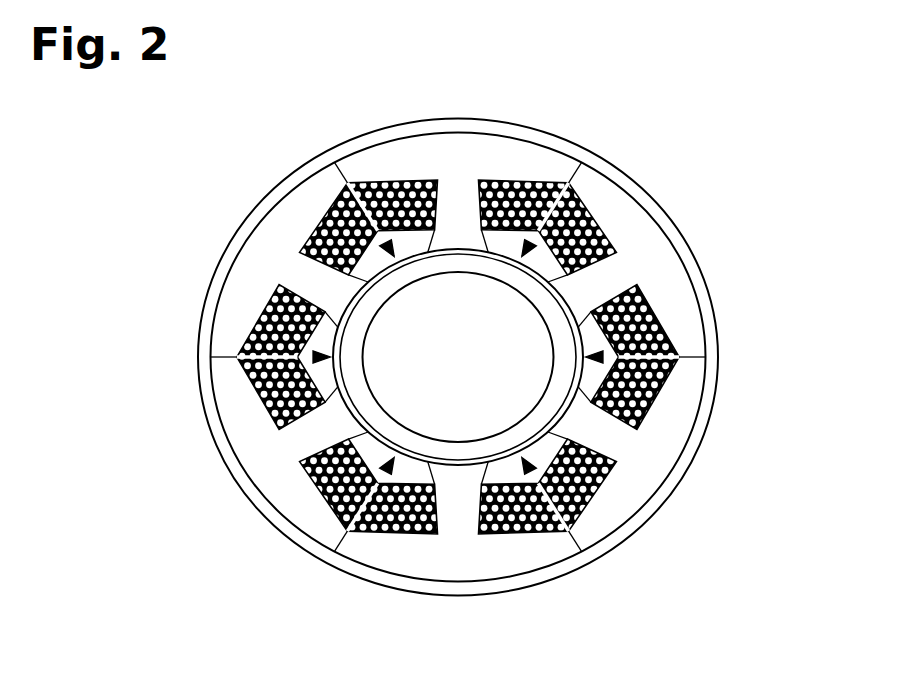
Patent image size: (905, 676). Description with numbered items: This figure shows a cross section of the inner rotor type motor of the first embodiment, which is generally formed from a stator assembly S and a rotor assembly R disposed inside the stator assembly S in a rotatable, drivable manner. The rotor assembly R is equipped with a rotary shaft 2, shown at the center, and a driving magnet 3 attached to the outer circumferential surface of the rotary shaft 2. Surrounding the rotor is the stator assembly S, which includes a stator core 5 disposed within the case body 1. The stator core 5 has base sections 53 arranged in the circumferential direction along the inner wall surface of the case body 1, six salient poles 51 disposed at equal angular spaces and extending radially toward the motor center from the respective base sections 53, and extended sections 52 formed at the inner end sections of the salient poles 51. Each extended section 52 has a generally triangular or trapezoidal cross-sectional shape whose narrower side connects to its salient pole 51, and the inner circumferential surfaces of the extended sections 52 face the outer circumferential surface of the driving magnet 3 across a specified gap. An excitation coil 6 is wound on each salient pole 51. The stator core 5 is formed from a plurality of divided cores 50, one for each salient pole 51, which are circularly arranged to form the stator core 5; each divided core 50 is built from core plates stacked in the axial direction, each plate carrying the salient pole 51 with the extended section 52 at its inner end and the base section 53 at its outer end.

The case body 1 is at (672, 473).
The rotary shaft 2 is at (436, 343).
The driving magnet 3 is at (370, 408).
The stator core 5 is at (221, 357).
The excitation coil 6 is at (294, 222).
The divided core 50 is at (502, 357).
The salient pole 51 is at (612, 280).
The extended section 52 is at (655, 330).
The base section 53 is at (617, 210).
The stator assembly S is at (454, 357).
The rotor assembly R is at (371, 457).